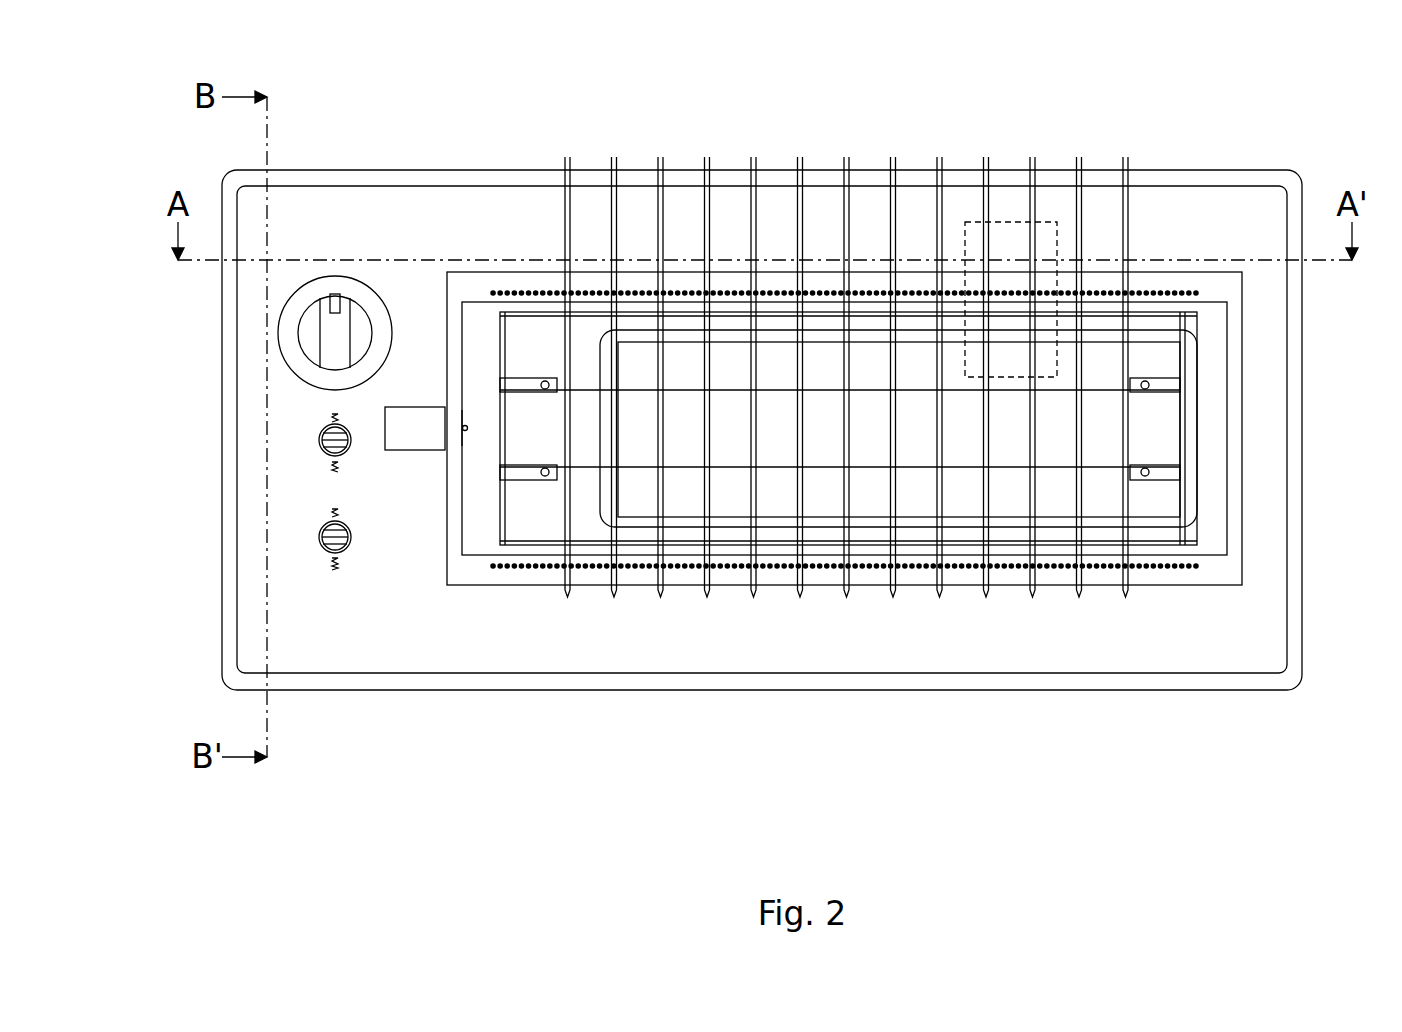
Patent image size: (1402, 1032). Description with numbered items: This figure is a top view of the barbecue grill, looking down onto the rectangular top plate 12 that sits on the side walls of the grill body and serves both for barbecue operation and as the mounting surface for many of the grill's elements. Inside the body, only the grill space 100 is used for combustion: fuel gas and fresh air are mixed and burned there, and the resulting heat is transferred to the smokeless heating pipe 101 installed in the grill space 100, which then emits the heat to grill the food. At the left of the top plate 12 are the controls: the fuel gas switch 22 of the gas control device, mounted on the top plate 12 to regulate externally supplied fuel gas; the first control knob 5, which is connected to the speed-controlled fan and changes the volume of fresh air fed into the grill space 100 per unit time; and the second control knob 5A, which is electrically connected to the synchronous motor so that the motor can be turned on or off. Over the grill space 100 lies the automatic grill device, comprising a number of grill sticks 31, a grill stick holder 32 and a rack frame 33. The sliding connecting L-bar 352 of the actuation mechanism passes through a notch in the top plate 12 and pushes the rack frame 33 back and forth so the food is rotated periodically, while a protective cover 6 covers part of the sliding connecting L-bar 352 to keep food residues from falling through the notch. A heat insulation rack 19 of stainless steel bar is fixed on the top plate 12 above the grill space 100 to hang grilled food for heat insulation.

The top plate 12 is at (316, 220).
The fuel gas switch 22 is at (315, 340).
The second control knob 5A is at (320, 440).
The first control knob 5 is at (337, 540).
The protective cover 6 is at (413, 425).
The smokeless heating pipe 101 is at (583, 410).
The sliding connecting L-bar 352 is at (465, 428).
The rack frame 33 is at (1145, 575).
The grill stick holder 32 is at (951, 426).
The heat insulation rack 19 is at (1045, 525).
The grill space 100 is at (813, 368).
The grill sticks 31 is at (925, 349).